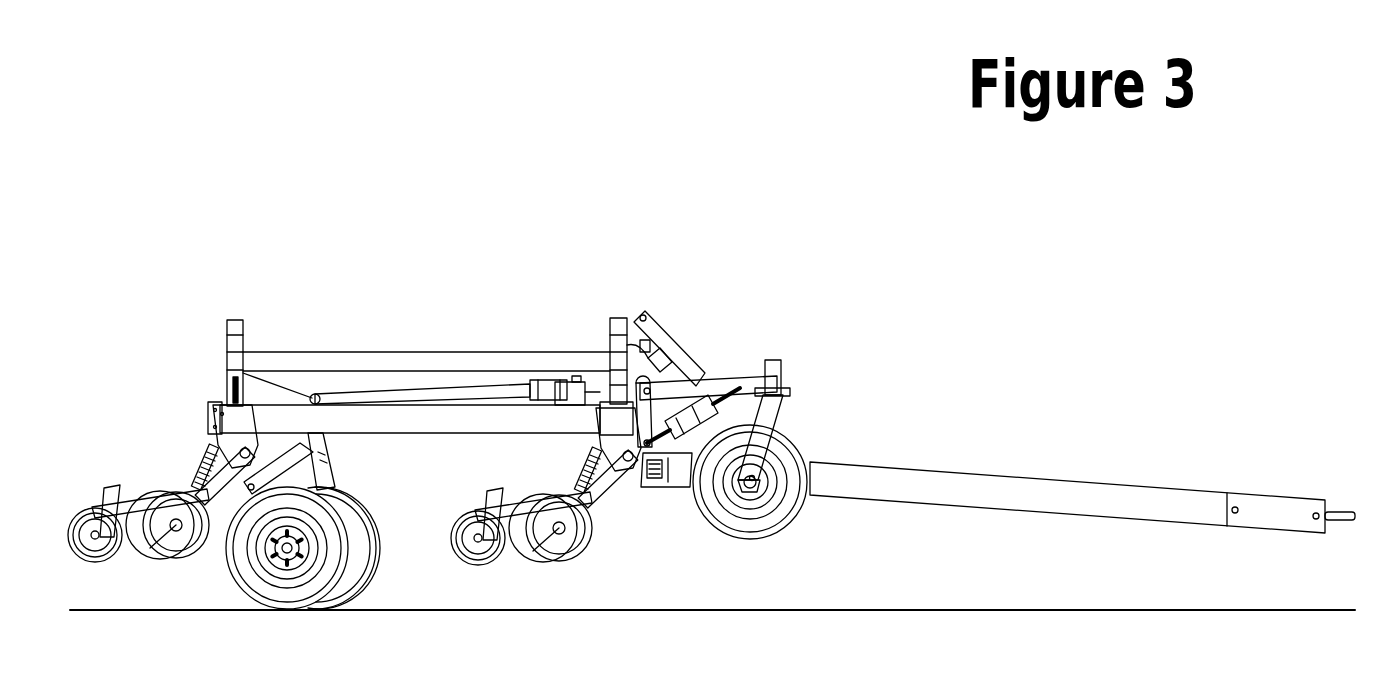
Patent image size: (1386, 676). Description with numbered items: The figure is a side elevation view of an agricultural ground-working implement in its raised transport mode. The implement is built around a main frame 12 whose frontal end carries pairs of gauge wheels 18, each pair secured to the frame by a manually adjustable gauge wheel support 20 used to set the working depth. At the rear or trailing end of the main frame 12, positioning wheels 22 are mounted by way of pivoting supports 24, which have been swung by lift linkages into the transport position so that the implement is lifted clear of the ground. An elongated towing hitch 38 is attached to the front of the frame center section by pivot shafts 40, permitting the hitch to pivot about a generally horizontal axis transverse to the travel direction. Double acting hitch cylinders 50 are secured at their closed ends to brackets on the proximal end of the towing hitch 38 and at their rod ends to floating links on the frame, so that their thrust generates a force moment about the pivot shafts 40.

The main frame 12 is at (456, 378).
The gauge wheels 18 is at (750, 527).
The gauge wheel support 20 is at (715, 400).
The positioning wheels 22 is at (276, 597).
The pivoting supports 24 is at (333, 480).
The towing hitch 38 is at (1152, 487).
The pivot shafts 40 is at (645, 470).
The hitch cylinders 50 is at (672, 485).